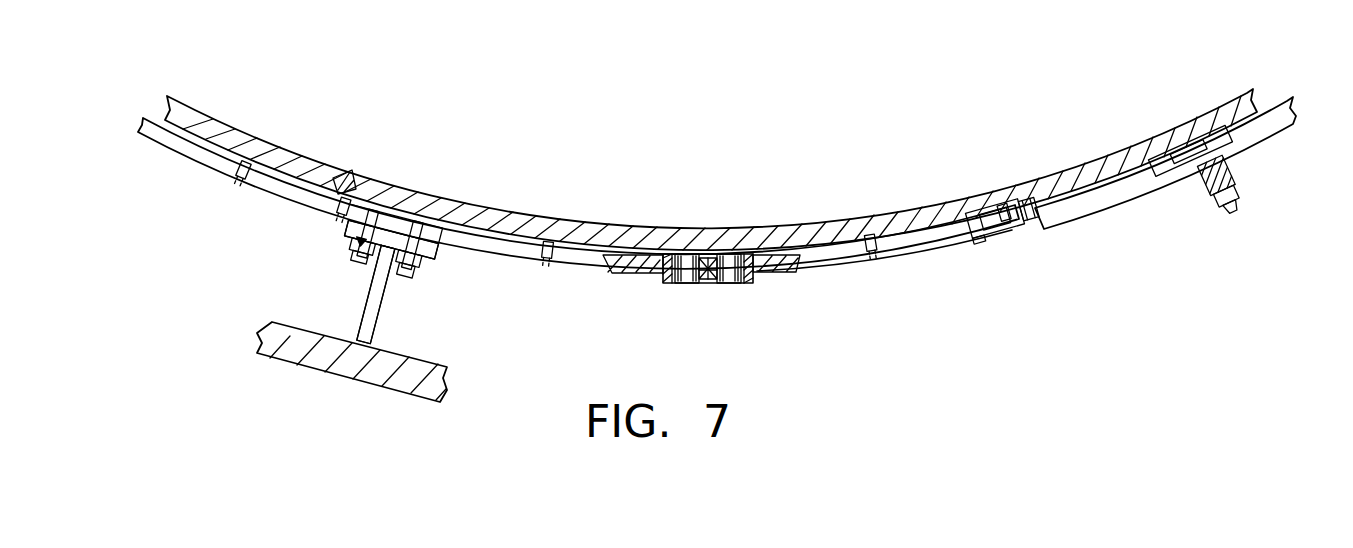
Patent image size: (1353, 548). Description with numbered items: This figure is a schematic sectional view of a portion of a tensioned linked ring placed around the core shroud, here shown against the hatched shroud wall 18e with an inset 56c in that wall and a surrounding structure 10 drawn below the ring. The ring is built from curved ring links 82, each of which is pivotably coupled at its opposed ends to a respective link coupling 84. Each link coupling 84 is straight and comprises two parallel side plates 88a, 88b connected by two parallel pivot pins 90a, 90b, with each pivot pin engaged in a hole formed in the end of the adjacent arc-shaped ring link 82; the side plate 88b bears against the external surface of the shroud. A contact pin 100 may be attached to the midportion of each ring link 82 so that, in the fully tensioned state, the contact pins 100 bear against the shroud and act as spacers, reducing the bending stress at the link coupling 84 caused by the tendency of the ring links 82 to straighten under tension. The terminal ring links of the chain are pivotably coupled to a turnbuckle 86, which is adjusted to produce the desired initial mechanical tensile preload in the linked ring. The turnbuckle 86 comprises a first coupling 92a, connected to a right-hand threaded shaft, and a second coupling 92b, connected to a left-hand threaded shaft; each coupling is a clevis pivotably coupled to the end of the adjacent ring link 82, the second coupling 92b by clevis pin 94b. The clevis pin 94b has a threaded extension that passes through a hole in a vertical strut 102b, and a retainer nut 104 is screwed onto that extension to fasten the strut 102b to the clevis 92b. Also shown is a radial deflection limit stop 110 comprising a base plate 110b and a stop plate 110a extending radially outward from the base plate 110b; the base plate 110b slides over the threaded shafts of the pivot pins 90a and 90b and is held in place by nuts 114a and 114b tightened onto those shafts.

The floor plate 10 is at (275, 370).
The curved wall panel 18e is at (801, 224).
The fastener insert 56c is at (338, 180).
The curved ring link 82 is at (273, 193).
The link coupling 84 is at (355, 262).
The turnbuckle 86 is at (1103, 218).
The side plate 88a is at (708, 283).
The side plate 88b is at (703, 250).
The pivot pin 90a is at (368, 268).
The pivot pin 90b is at (410, 278).
The first coupling 92a is at (1018, 248).
The second coupling 92b is at (1180, 140).
The clevis pin 94b is at (1240, 204).
The contact pin 100 is at (348, 185).
The vertical strut 102b is at (1238, 170).
The retainer nut 104 is at (1212, 200).
The radial deflection limit stop 110 is at (380, 333).
The stop plate 110a is at (372, 300).
The base plate 110b is at (352, 232).
The nut 114a is at (362, 258).
The nut 114b is at (420, 265).